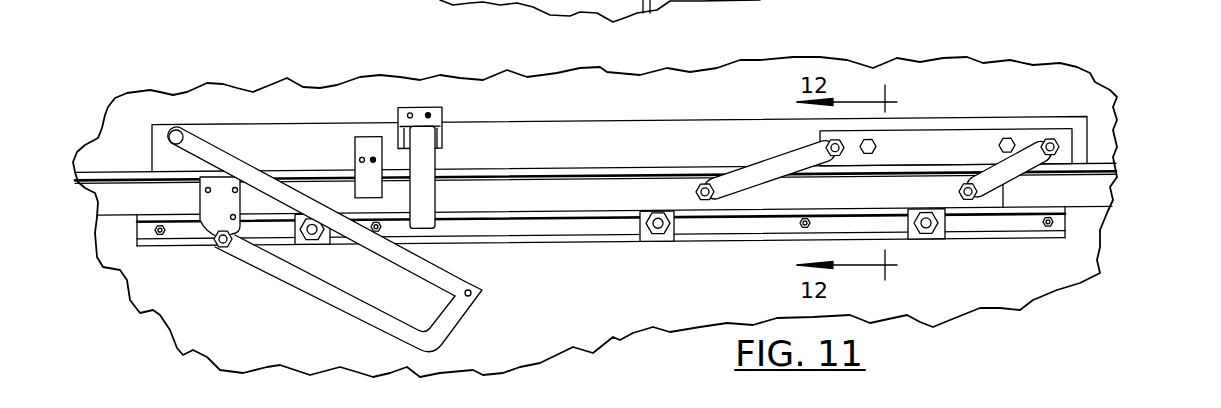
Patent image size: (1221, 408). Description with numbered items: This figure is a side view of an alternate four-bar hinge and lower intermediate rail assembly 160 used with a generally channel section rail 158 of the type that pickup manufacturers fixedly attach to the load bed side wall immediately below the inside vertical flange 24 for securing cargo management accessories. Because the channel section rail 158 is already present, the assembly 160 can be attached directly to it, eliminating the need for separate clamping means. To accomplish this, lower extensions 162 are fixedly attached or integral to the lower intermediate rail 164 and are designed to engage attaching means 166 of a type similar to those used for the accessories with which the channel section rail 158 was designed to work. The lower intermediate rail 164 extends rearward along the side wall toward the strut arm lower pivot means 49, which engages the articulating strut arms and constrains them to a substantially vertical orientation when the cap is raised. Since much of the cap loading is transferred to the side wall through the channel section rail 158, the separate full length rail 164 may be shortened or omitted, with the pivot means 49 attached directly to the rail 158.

The inside vertical flange 24 is at (1095, 188).
The strut arm lower pivot means 49 is at (222, 250).
The channel section rail 158 is at (522, 229).
The 4-bar hinge and lower intermediate rail assembly 160 is at (1040, 123).
The lower extension 162 is at (675, 237).
The lower intermediate rail 164 is at (458, 193).
The attaching means 166 is at (887, 188).